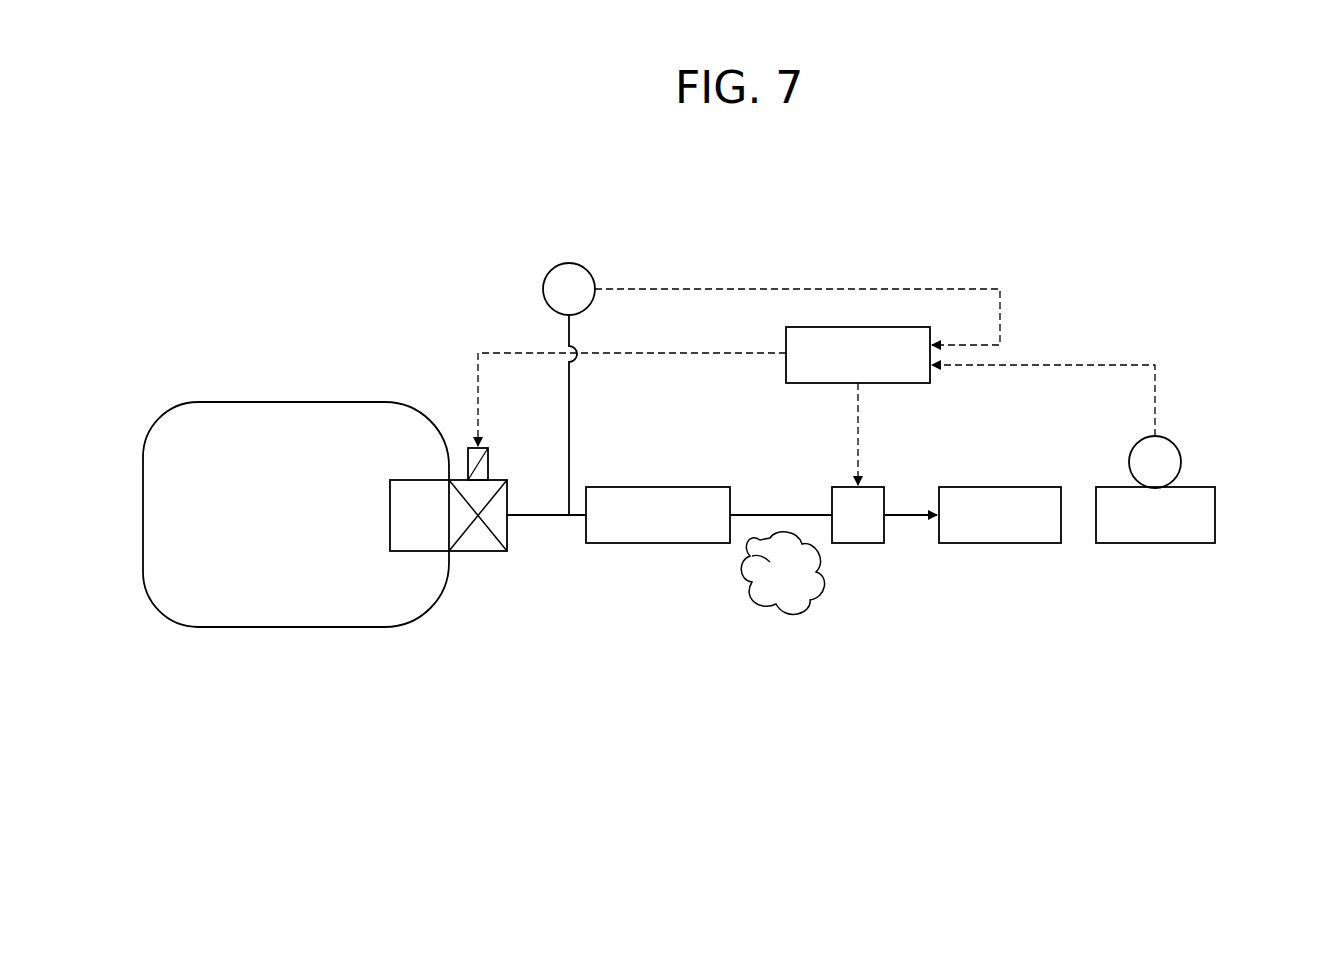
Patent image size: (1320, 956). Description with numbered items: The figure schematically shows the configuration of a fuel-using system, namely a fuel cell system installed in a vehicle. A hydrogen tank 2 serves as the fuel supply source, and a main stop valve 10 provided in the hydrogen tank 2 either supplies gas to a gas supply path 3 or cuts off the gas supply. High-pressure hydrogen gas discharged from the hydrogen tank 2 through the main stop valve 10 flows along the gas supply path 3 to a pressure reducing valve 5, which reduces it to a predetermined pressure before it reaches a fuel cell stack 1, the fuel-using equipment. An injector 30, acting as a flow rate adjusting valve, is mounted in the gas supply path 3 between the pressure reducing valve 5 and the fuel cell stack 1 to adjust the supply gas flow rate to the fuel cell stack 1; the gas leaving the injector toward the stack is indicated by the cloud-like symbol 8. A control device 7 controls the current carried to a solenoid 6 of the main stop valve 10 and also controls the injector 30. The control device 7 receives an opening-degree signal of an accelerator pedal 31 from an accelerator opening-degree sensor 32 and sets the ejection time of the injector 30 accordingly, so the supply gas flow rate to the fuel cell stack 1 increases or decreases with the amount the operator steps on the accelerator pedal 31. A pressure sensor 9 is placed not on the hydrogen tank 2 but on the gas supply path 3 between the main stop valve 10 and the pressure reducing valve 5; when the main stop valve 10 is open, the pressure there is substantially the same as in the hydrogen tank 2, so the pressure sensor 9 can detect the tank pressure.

The fuel cell stack 1 is at (1000, 543).
The hydrogen tank 2 is at (222, 402).
The gas supply path 3 is at (543, 516).
The pressure reducing valve 5 is at (672, 543).
The solenoid 6 is at (488, 466).
The control device 7 is at (800, 383).
The fuel vapor 8 is at (782, 561).
The pressure sensor 9 is at (569, 263).
The main stop valve 10 is at (478, 556).
The injector 30 is at (858, 543).
The accelerator pedal 31 is at (1155, 543).
The accelerator opening-degree sensor 32 is at (1181, 455).